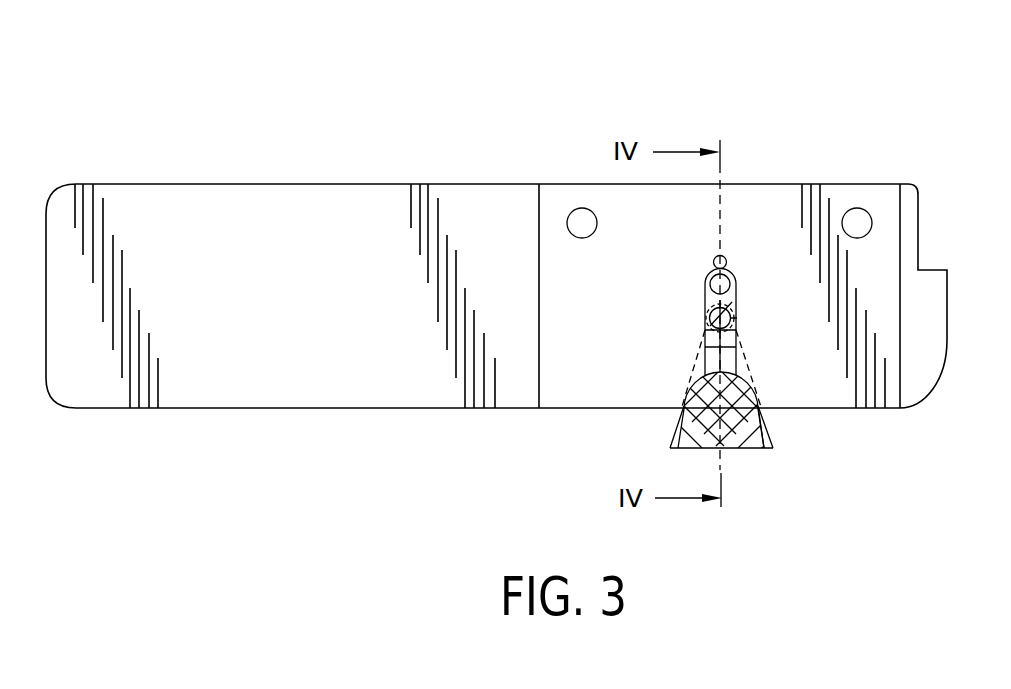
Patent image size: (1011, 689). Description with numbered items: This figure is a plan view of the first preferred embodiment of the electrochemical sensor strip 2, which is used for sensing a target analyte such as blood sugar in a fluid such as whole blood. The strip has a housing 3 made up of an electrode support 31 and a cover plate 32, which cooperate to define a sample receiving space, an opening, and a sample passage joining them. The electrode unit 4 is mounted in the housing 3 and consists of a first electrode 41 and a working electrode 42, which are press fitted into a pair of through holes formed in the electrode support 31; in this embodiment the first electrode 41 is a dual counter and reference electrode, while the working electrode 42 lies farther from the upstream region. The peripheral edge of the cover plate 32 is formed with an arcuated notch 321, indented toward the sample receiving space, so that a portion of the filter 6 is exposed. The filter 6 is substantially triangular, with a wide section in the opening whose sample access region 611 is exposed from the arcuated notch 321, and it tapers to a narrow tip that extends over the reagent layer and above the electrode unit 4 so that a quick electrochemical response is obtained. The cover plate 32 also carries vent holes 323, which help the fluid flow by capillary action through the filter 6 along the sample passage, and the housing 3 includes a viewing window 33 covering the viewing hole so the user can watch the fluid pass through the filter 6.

The electrochemical sensor strip 2 is at (879, 155).
The housing 3 is at (303, 180).
The electrode support 31 is at (443, 184).
The cover plate 32 is at (590, 187).
The viewing window 33 is at (736, 298).
The electrode unit 4 is at (758, 318).
The first electrode 41 is at (738, 331).
The working electrode 42 is at (735, 272).
The filter 6 is at (708, 430).
The arcuated notch 321 is at (756, 386).
The vent holes 323 is at (713, 262).
The sample access region 611 is at (712, 390).